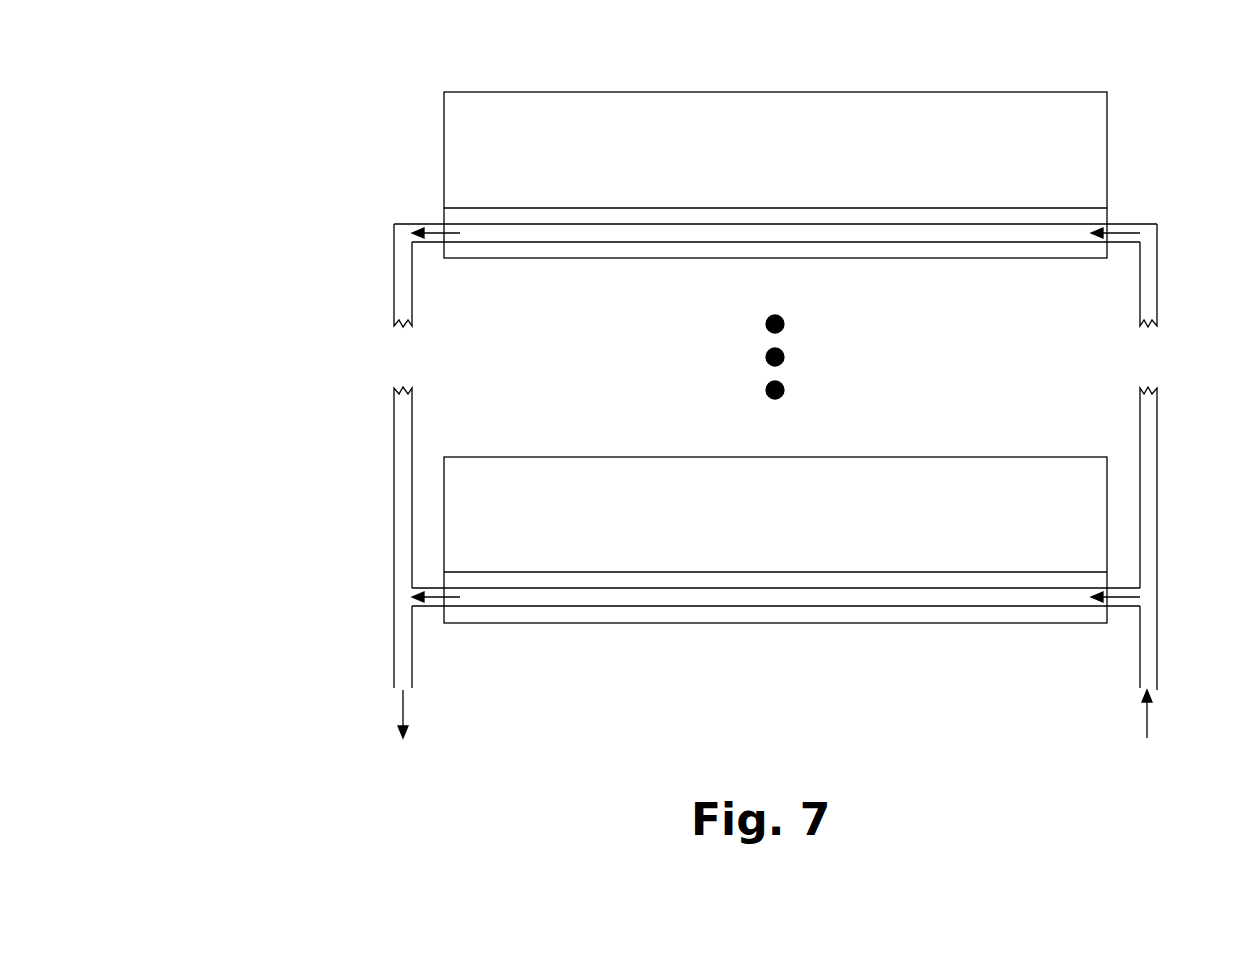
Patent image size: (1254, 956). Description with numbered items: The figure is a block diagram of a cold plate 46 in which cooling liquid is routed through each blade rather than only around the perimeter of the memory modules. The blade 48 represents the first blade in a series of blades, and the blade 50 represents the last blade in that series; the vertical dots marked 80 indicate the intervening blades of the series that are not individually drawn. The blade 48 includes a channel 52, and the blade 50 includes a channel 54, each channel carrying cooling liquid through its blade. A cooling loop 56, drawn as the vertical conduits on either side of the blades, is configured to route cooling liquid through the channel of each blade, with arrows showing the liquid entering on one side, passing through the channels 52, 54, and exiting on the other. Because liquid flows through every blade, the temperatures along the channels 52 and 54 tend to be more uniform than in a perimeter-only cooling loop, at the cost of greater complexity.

The cold plate 46 is at (279, 787).
The blade 48 is at (578, 456).
The blade 50 is at (578, 91).
The channel 52 is at (610, 600).
The channel 54 is at (610, 234).
The cooling loop 56 is at (394, 272).
The additional stacked units 80 is at (751, 376).